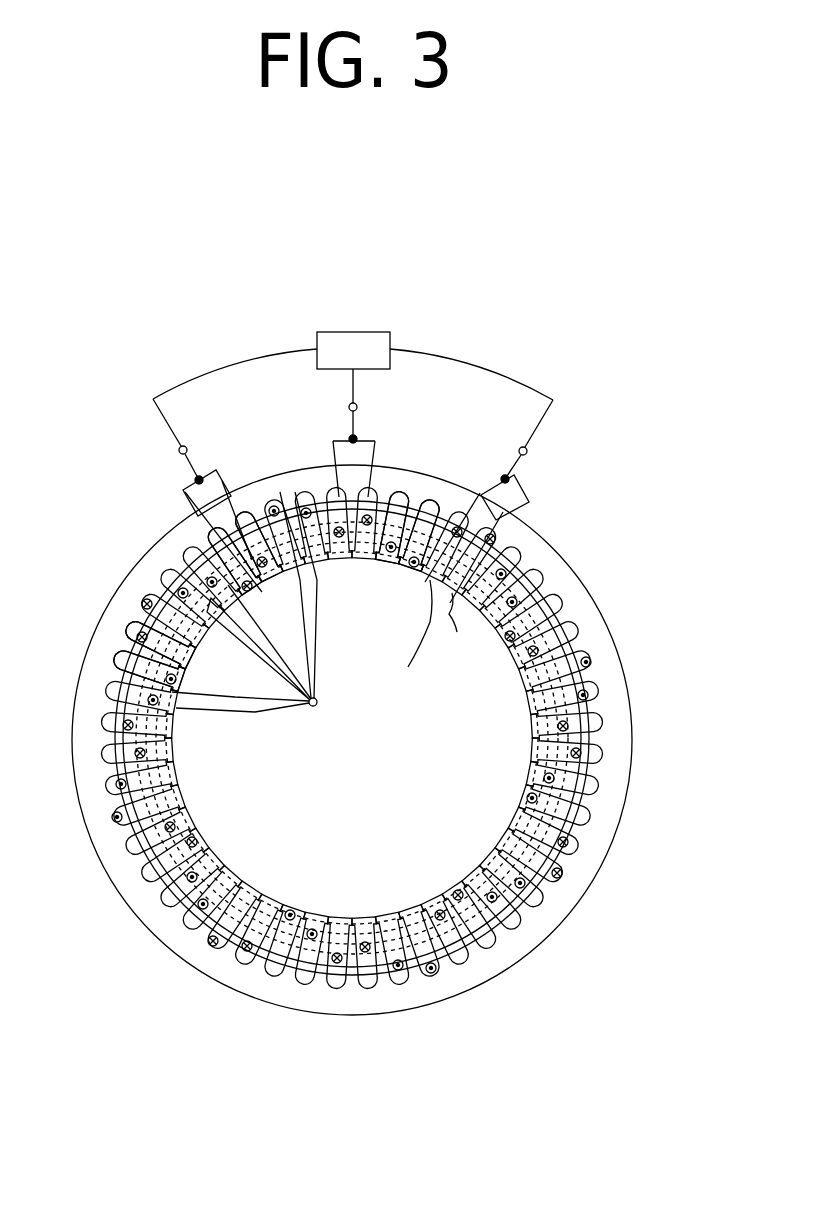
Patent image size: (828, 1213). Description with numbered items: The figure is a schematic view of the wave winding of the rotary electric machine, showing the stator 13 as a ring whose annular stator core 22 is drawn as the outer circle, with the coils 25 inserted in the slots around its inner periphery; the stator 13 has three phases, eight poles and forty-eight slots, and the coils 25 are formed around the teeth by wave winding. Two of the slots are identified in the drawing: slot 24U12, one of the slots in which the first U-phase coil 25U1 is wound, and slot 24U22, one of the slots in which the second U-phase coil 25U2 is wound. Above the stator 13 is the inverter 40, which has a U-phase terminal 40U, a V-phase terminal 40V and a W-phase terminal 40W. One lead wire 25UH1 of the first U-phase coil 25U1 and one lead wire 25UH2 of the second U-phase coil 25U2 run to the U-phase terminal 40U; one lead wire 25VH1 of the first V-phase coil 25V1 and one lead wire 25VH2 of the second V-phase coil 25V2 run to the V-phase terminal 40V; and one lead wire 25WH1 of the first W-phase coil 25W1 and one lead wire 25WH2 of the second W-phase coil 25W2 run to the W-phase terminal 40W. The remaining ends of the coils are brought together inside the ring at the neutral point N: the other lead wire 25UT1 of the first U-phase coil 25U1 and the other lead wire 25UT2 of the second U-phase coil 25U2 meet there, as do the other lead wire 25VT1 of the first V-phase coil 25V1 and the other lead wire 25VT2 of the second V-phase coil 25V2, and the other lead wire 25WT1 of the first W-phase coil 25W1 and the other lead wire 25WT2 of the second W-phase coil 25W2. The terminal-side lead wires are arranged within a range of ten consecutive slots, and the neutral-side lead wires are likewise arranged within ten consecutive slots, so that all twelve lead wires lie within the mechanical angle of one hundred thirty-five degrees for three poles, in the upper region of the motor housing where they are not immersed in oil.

The stator 13 is at (392, 740).
The annular stator core 22 is at (620, 739).
The coils 25 is at (601, 705).
The inverter 40 is at (353, 332).
The U-phase terminal 40U is at (527, 451).
The V-phase terminal 40V is at (358, 405).
The W-phase terminal 40W is at (179, 450).
The first U-phase coil 25U1 is at (420, 497).
The second U-phase coil 25U2 is at (390, 492).
The first V-phase coil 25V1 is at (252, 513).
The second V-phase coil 25V2 is at (299, 609).
The first W-phase coil 25W1 is at (127, 616).
The second W-phase coil 25W2 is at (120, 655).
The lead wire of the first U-phase coil 25UH1 is at (523, 503).
The lead wire of the second U-phase coil 25UH2 is at (489, 470).
The lead wire of the first V-phase coil 25VH1 is at (375, 441).
The lead wire of the second V-phase coil 25VH2 is at (333, 441).
The lead wire of the first W-phase coil 25WH1 is at (256, 447).
The lead wire of the second W-phase coil 25WH2 is at (186, 500).
The other lead wire of the first U-phase coil 25UT1 is at (310, 584).
The other lead wire of the second U-phase coil 25UT2 is at (329, 613).
The other lead wire of the first V-phase coil 25VT1 is at (246, 611).
The other lead wire of the second V-phase coil 25VT2 is at (272, 642).
The other lead wire of the first W-phase coil 25WT1 is at (198, 712).
The other lead wire of the second W-phase coil 25WT2 is at (272, 705).
The slot of the first U-phase coil 24U12 is at (460, 630).
The slot of the second U-phase coil 24U22 is at (405, 638).
The neutral point N is at (317, 701).